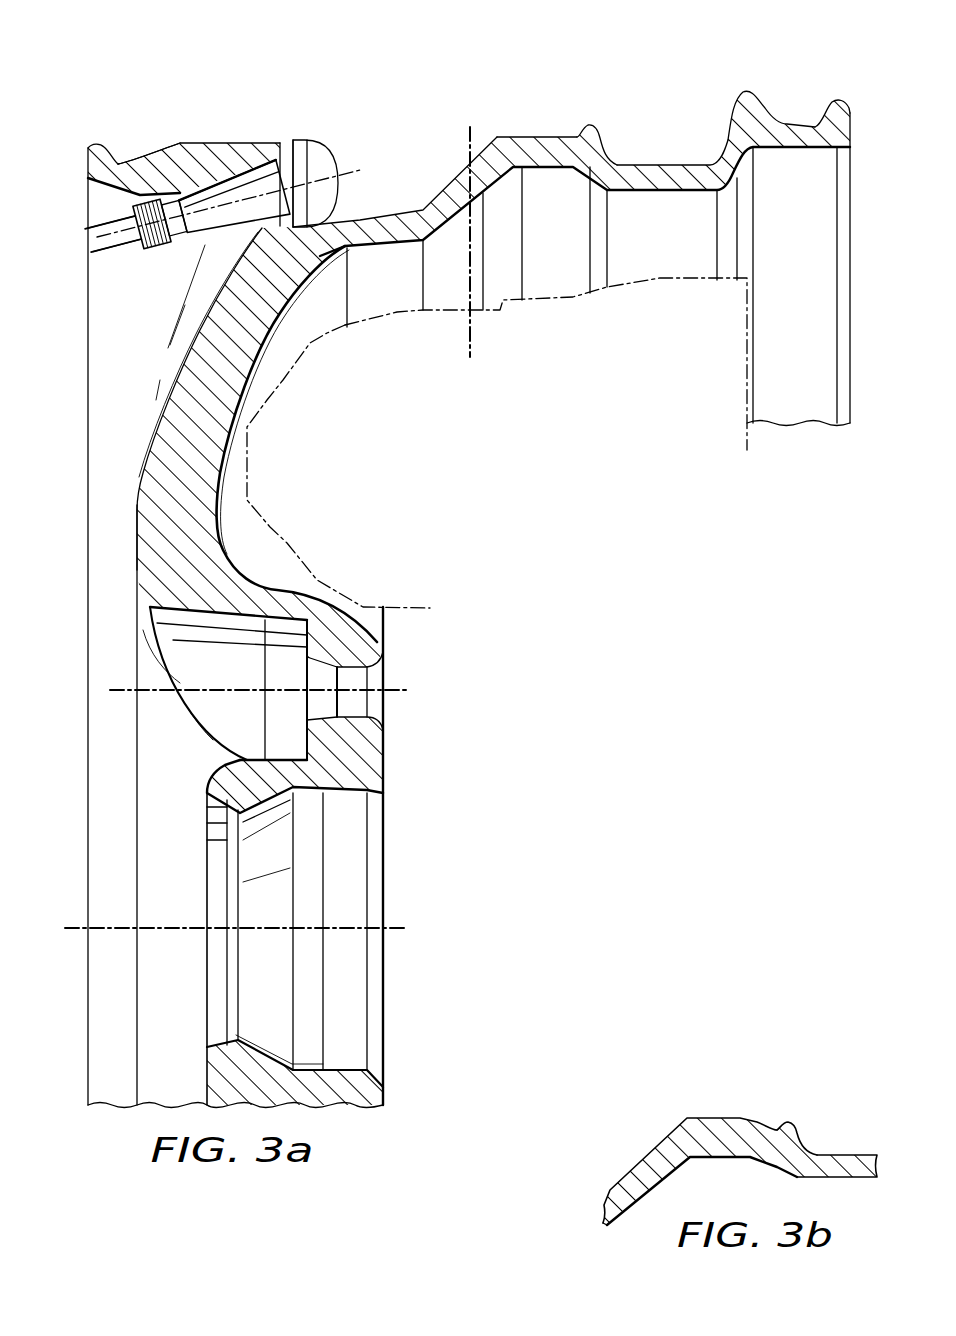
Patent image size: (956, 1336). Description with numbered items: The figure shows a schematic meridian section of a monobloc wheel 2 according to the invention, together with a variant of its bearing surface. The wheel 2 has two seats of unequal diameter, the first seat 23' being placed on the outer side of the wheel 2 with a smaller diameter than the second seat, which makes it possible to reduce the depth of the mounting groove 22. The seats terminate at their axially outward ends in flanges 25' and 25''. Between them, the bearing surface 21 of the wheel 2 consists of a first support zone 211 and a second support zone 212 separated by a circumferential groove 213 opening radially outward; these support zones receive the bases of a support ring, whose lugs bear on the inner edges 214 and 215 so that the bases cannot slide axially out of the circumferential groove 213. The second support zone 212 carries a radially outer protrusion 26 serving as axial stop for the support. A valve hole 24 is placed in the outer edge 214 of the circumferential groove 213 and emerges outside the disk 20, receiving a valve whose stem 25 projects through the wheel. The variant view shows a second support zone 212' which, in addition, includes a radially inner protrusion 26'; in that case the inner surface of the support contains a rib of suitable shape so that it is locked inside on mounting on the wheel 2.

In FIG. 3A, the wheel 2 is at (160, 86).
In FIG. 3A, the disk 20 is at (190, 382).
In FIG. 3A, the bearing surface 21 is at (574, 60).
In FIG. 3A, the first support zone 211 is at (218, 140).
In FIG. 3A, the second support zone 212 is at (530, 107).
In FIG. 3A, the circumferential groove 213 is at (392, 210).
In FIG. 3A, the outer edge 214 is at (284, 140).
In FIG. 3A, the inner edge 215 is at (471, 347).
In FIG. 3A, the mounting groove 22 is at (667, 163).
In FIG. 3B, the mounting groove 22 is at (837, 1150).
In FIG. 3A, the first seat 23' is at (464, 109).
In FIG. 3A, the valve hole 24 is at (224, 230).
In FIG. 3A, the valve stem 25 is at (86, 222).
In FIG. 3A, the flange 25' is at (89, 124).
In FIG. 3A, the flange 25'' is at (847, 86).
In FIG. 3A, the radially outer protrusion 26 is at (597, 114).
In FIG. 3B, the raised rim base portion 212' is at (740, 1145).
In FIG. 3B, the radially inner protrusion 26' is at (780, 1111).